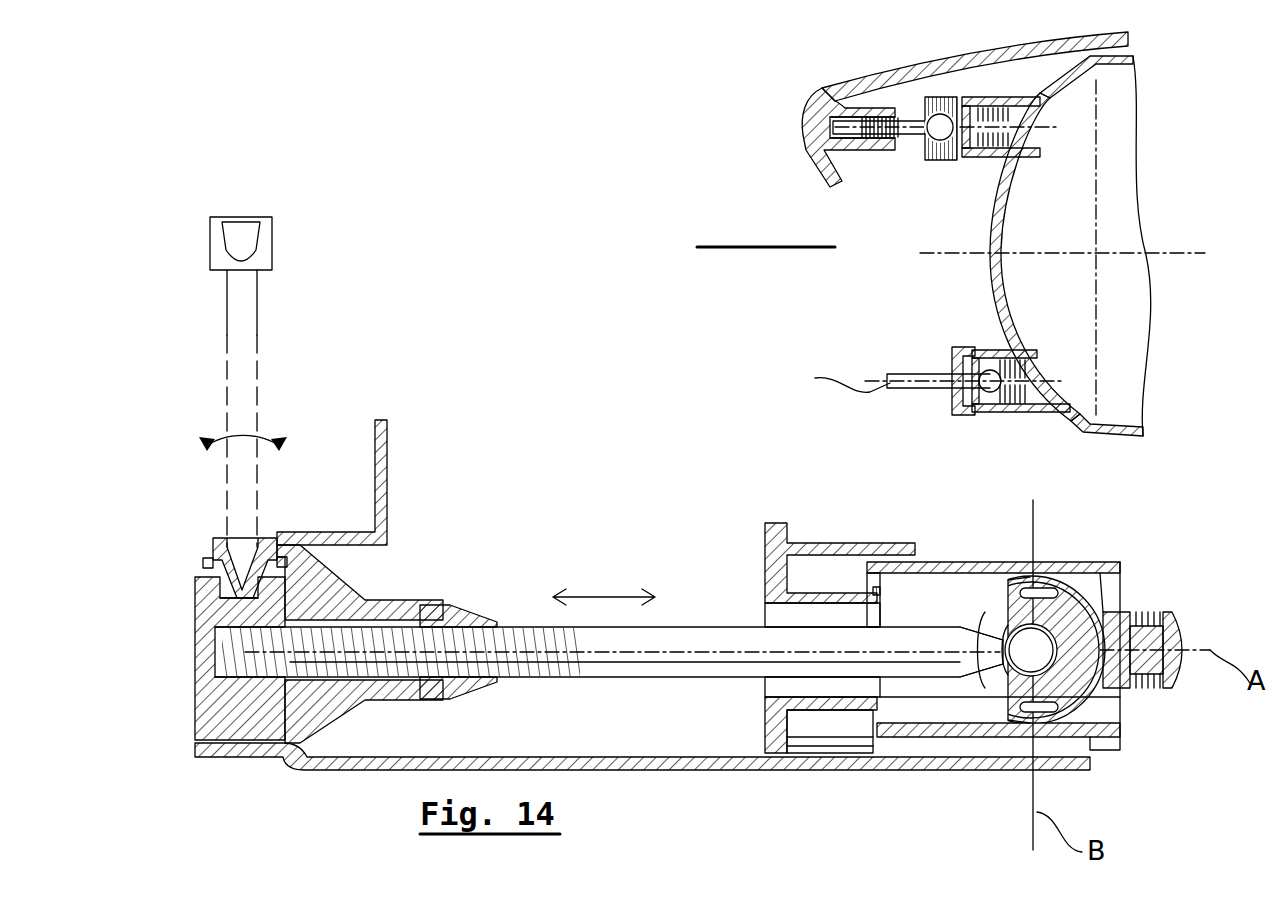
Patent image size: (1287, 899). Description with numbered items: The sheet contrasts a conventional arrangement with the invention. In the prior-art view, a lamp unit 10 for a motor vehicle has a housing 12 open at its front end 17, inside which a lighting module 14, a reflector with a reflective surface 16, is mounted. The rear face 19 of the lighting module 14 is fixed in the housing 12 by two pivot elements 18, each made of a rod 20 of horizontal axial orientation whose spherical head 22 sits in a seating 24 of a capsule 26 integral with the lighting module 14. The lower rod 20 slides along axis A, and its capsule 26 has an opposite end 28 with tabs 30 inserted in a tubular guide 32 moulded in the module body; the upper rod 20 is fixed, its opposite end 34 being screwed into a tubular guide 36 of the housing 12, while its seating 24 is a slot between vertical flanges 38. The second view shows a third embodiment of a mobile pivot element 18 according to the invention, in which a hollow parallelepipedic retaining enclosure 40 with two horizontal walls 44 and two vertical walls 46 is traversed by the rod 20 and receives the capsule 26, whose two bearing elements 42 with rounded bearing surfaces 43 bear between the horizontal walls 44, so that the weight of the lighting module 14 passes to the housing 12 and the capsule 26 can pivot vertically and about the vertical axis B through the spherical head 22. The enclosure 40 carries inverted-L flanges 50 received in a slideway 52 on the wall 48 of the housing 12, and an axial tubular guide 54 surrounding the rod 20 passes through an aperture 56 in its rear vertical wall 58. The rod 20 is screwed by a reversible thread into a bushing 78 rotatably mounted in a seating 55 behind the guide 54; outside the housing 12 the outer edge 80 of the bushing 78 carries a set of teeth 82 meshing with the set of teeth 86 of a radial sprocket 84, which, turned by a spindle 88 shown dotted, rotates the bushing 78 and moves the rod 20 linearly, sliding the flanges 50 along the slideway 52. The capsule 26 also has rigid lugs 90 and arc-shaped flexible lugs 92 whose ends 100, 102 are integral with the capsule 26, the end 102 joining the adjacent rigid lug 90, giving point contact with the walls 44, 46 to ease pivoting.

In FIG. 13, the lamp unit 10 is at (745, 82).
In FIG. 13, the housing 12 is at (1013, 44).
In FIG. 14, the housing 12 is at (398, 500).
In FIG. 13, the lighting module 14 is at (1150, 62).
In FIG. 13, the reflective surface 16 is at (1012, 280).
In FIG. 13, the front end 17 is at (1130, 40).
In FIG. 13, the pivot element 18 is at (945, 95).
In FIG. 14, the pivot element 18 is at (1000, 680).
In FIG. 13, the rear face 19 is at (1078, 408).
In FIG. 13, the rod 20 is at (922, 137).
In FIG. 13, the spherical head 22 is at (950, 156).
In FIG. 14, the spherical head 22 is at (997, 672).
In FIG. 13, the seating 24 is at (942, 96).
In FIG. 14, the seating 24 is at (1080, 708).
In FIG. 13, the capsule 26 is at (960, 160).
In FIG. 14, the capsule 26 is at (1192, 610).
In FIG. 13, the opposite end 28 is at (1052, 372).
In FIG. 14, the opposite end 28 is at (1190, 633).
In FIG. 13, the tabs 30 is at (1015, 402).
In FIG. 14, the tabs 30 is at (1140, 610).
In FIG. 13, the tubular guide 32 is at (990, 345).
In FIG. 13, the opposite end 34 is at (890, 142).
In FIG. 13, the tubular guide 36 is at (868, 115).
In FIG. 13, the vertical flanges 38 is at (875, 115).
In FIG. 14, the retaining enclosure 40 is at (1080, 553).
In FIG. 14, the bearing elements 42 is at (1078, 565).
In FIG. 14, the bearing surface 43 is at (1045, 578).
In FIG. 14, the horizontal walls 44 is at (942, 564).
In FIG. 14, the vertical walls 46 is at (970, 582).
In FIG. 14, the wall 48 is at (830, 737).
In FIG. 14, the flanges 50 is at (1003, 745).
In FIG. 14, the slideway 52 is at (805, 748).
In FIG. 14, the axial tubular guide 54 is at (820, 592).
In FIG. 14, the seating 55 is at (392, 603).
In FIG. 14, the aperture 56 is at (878, 594).
In FIG. 14, the rear vertical wall 58 is at (822, 720).
In FIG. 14, the bushing 78 is at (458, 612).
In FIG. 14, the outer edge 80 is at (208, 592).
In FIG. 14, the set of teeth 82 is at (234, 607).
In FIG. 14, the sprocket 84 is at (267, 545).
In FIG. 14, the set of teeth 86 is at (212, 550).
In FIG. 14, the spindle 88 is at (242, 355).
In FIG. 14, the rigid lugs 90 is at (962, 667).
In FIG. 14, the flexible lugs 92 is at (1062, 580).
In FIG. 14, the end 100 is at (1120, 572).
In FIG. 14, the end 102 is at (975, 612).